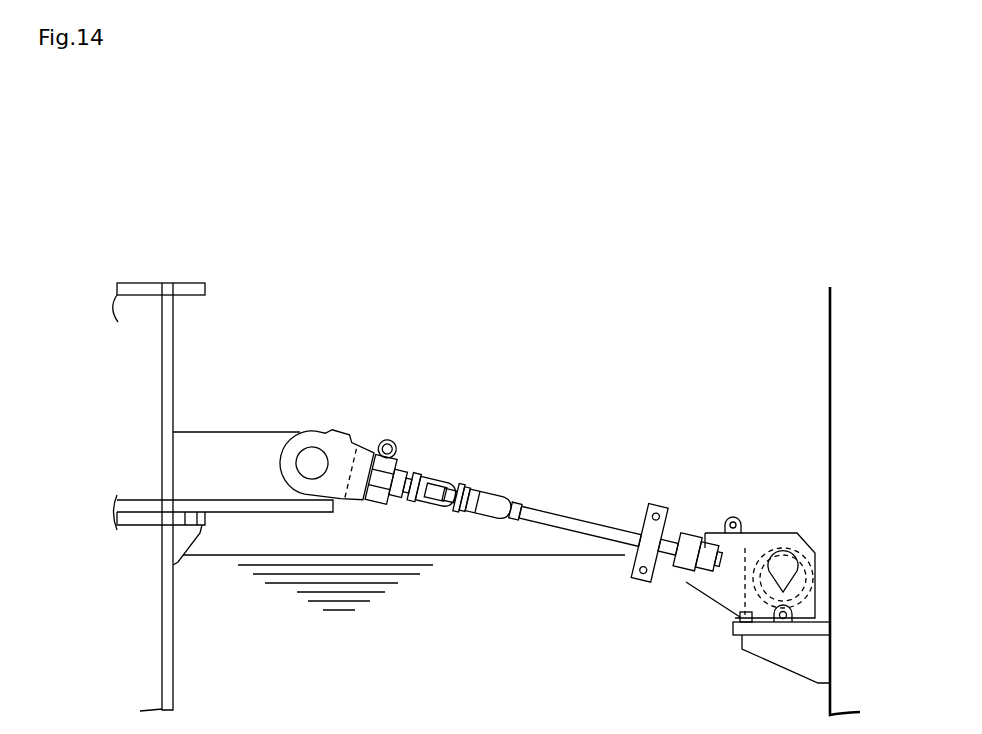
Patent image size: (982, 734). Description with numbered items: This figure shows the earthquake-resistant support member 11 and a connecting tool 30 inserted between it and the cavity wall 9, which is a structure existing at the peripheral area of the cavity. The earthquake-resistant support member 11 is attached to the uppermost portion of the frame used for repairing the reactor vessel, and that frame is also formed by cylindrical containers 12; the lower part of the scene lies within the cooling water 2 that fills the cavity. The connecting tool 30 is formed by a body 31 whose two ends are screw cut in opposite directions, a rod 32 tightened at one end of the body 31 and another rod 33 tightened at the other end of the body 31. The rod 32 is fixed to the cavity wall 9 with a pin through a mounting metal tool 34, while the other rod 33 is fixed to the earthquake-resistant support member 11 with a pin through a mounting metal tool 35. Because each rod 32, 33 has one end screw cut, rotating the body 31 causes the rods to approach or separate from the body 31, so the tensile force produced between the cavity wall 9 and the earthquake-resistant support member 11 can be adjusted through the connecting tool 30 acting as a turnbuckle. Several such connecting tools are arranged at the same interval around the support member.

The cooling water 2 is at (211, 590).
The cavity wall 9 is at (829, 388).
The earthquake-resistant support member 11 is at (142, 292).
The cylindrical container 12 is at (175, 685).
The connecting tool 30 is at (544, 586).
The body 31 is at (529, 529).
The rod 32 is at (468, 522).
The rod 33 is at (390, 505).
The mounting metal tool 34 is at (733, 590).
The mounting metal tool 35 is at (238, 432).